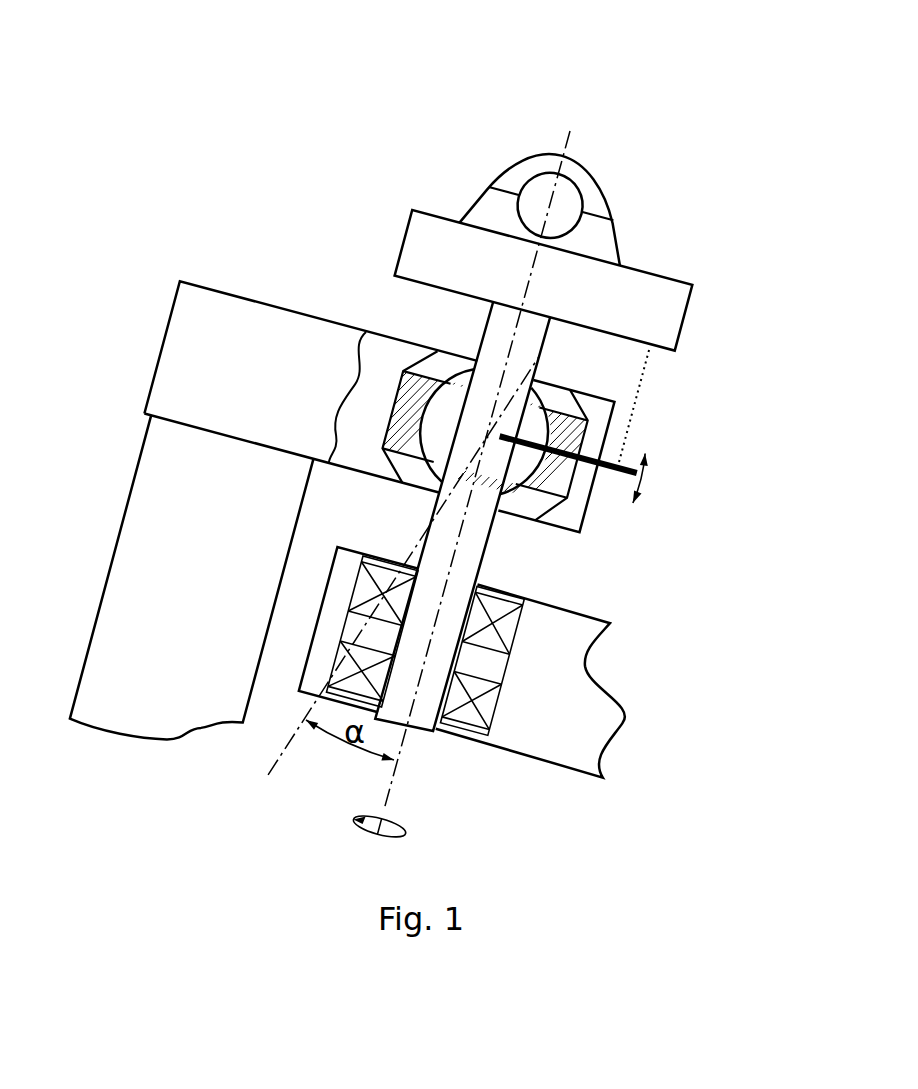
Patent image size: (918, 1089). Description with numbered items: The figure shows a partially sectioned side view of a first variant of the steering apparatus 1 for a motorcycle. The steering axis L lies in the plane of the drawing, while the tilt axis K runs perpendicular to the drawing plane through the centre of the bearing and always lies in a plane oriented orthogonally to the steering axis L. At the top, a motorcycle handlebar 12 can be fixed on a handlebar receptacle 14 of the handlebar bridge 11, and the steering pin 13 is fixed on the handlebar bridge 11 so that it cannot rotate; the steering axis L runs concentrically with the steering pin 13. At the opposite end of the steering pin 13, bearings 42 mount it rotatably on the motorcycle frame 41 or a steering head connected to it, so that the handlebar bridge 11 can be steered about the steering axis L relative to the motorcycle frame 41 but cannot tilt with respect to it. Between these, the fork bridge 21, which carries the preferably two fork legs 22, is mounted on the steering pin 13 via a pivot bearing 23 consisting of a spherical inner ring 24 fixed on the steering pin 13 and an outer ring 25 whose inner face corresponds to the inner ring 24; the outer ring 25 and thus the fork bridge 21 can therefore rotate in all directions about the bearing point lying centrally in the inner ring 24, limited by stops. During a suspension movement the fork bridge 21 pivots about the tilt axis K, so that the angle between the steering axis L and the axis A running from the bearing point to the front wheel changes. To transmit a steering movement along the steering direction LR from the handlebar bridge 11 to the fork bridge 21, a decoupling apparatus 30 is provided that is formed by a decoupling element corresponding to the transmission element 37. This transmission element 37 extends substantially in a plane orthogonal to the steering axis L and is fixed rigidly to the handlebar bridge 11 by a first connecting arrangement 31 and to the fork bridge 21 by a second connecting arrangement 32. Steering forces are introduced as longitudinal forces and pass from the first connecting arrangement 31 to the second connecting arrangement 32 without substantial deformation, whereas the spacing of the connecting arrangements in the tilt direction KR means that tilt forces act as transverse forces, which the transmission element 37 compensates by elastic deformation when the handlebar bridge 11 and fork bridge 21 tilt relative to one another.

The steering apparatus 1 is at (172, 74).
The handlebar bridge 11 is at (673, 340).
The motorcycle handlebar 12 is at (580, 200).
The steering pin 13 is at (431, 728).
The handlebar receptacle 14 is at (597, 250).
The fork bridge 21 is at (178, 333).
The fork legs 22 is at (138, 548).
The pivot bearing 23 is at (398, 366).
The spherical inner ring 24 is at (513, 483).
The outer ring 25 is at (397, 443).
The decoupling apparatus 30 is at (650, 512).
The first connecting arrangement 31 is at (651, 418).
The second connecting arrangement 32 is at (515, 429).
The transmission element 37 is at (610, 480).
The motorcycle frame 41 is at (548, 753).
The bearings 42 is at (507, 622).
The tilt axis K is at (484, 426).
The steering axis L is at (479, 463).
The axis A is at (387, 566).
The tilt direction KR is at (660, 479).
The steering direction LR is at (400, 832).